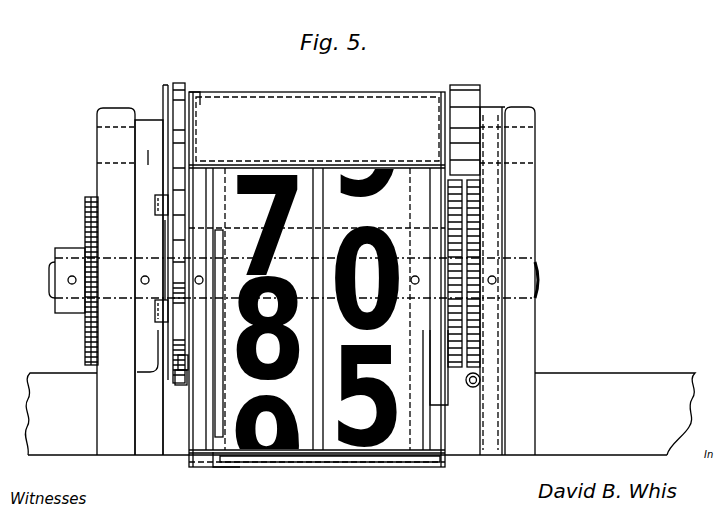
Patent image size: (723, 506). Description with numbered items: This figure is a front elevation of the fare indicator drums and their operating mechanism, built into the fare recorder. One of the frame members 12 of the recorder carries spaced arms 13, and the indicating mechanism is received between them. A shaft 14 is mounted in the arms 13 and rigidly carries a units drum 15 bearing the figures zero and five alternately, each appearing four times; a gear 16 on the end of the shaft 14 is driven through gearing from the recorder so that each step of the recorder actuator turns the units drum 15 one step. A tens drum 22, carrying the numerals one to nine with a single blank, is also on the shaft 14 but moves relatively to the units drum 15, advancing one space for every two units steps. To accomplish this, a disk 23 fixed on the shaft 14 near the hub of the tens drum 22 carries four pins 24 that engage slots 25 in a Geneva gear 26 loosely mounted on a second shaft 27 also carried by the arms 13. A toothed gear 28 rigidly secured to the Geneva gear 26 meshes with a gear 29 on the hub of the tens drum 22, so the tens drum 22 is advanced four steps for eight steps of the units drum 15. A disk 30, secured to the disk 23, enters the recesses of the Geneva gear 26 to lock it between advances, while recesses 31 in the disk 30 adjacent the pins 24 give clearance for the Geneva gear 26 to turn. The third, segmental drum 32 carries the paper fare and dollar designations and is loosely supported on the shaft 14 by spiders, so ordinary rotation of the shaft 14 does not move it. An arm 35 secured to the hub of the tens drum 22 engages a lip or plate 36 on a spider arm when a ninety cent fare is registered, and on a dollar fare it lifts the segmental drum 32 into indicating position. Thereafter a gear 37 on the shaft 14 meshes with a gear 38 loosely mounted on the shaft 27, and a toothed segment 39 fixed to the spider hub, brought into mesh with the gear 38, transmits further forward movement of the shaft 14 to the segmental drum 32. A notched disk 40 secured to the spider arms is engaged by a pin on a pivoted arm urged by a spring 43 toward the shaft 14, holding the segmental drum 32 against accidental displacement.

The frame member 12 is at (645, 388).
The arms 13 is at (106, 118).
The shaft 14 is at (53, 272).
The units drum 15 is at (410, 440).
The gear 16 is at (85, 332).
The tens drum 22 is at (316, 452).
The disk 23 is at (155, 372).
The pins 24 is at (165, 208).
The slots 25 is at (166, 143).
The Geneva gear 26 is at (177, 92).
The second shaft 27 is at (148, 168).
The toothed gear 28 is at (194, 92).
The gear 29 is at (184, 385).
The disk 30 is at (183, 370).
The recesses 31 is at (168, 302).
The segmental drum 32 is at (385, 96).
The arm 35 is at (220, 405).
The lip or plate 36 is at (222, 465).
The gear 37 is at (475, 320).
The gear 38 is at (470, 86).
The toothed segment 39 is at (458, 278).
The disk 40 is at (440, 406).
The spring 43 is at (472, 388).